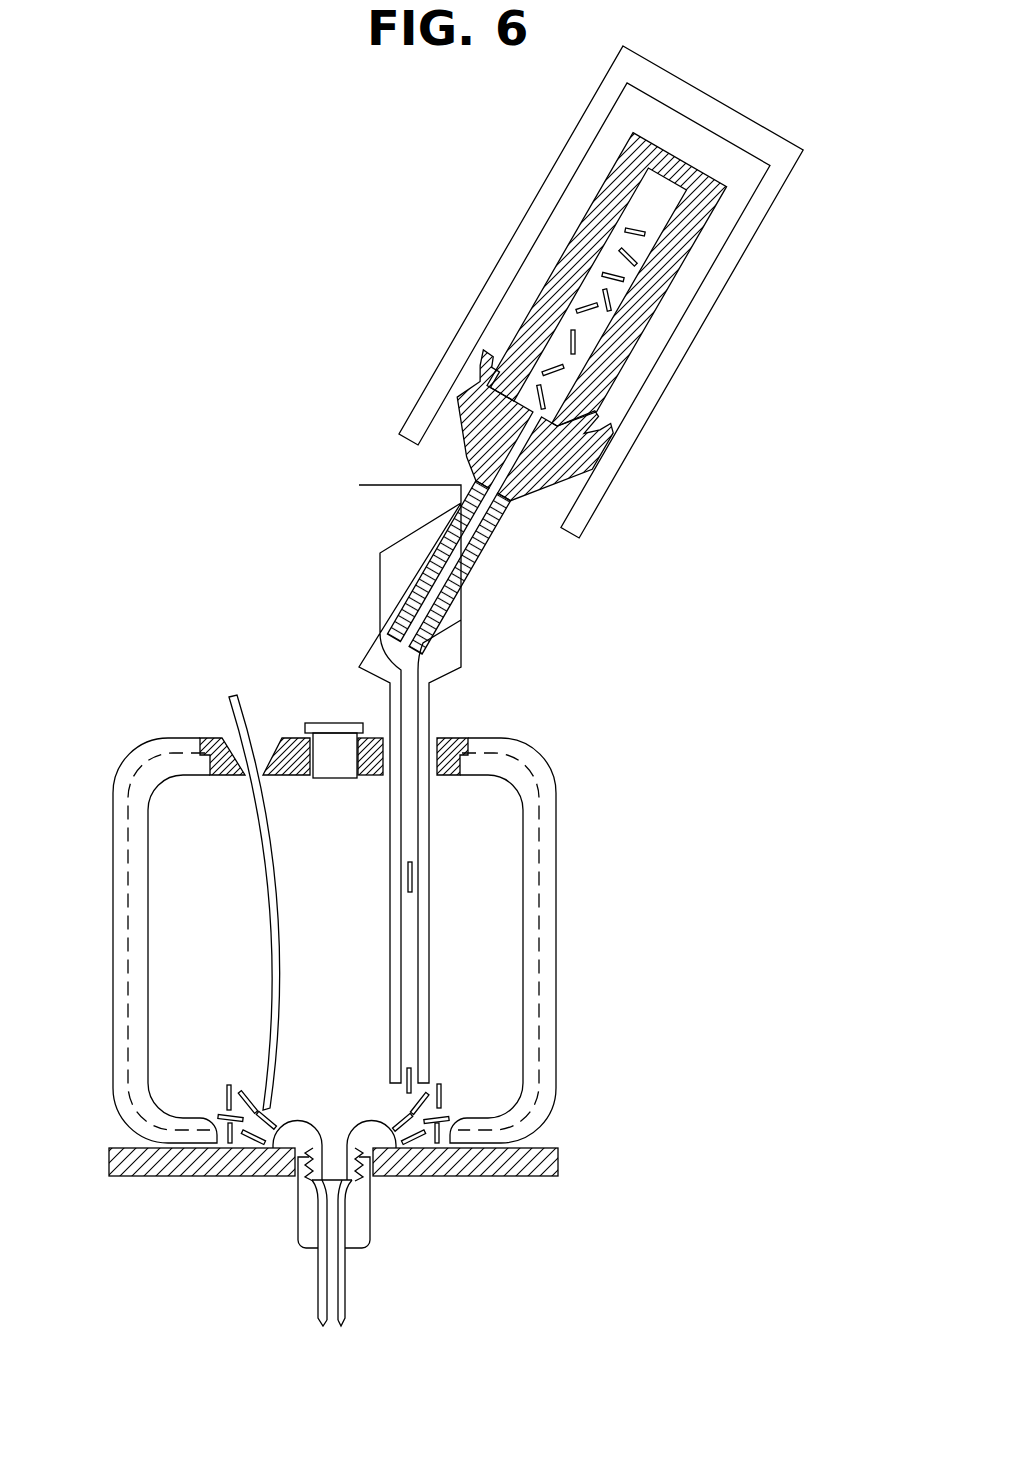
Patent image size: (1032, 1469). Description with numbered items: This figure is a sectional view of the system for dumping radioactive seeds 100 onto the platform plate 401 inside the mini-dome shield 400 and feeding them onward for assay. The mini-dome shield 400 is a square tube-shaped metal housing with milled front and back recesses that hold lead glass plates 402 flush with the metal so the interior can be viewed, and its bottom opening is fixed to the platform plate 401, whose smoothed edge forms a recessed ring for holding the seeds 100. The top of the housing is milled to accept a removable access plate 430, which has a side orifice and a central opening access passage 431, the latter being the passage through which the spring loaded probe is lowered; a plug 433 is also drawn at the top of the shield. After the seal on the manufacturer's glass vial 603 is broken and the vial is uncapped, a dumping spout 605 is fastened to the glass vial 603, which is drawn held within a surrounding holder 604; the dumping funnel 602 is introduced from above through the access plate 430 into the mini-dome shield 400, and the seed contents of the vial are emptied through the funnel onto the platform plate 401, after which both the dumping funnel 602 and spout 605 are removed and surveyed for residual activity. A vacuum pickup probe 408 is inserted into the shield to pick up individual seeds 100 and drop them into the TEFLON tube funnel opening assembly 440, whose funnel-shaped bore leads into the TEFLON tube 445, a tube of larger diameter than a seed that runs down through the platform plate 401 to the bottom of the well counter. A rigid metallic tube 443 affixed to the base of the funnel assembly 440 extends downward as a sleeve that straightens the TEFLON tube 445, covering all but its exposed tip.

The radioactive seeds 100 is at (577, 352).
The mini-dome shield 400 is at (557, 858).
The platform plate 401 is at (558, 1162).
The lead glass plates 402 is at (540, 975).
The vacuum pickup probe 408 is at (233, 716).
The access plate 430 is at (460, 737).
The central opening access passage 431 is at (303, 733).
The plug 433 is at (337, 723).
The TEFLON tube funnel opening assembly 440 is at (370, 1194).
The rigid metallic tube 443 is at (350, 1292).
The TEFLON tube 445 is at (345, 1263).
The dumping funnel 602 is at (461, 655).
The glass vial 603 is at (630, 363).
The cartridge holder 604 is at (713, 312).
The dumping spout 605 is at (525, 497).